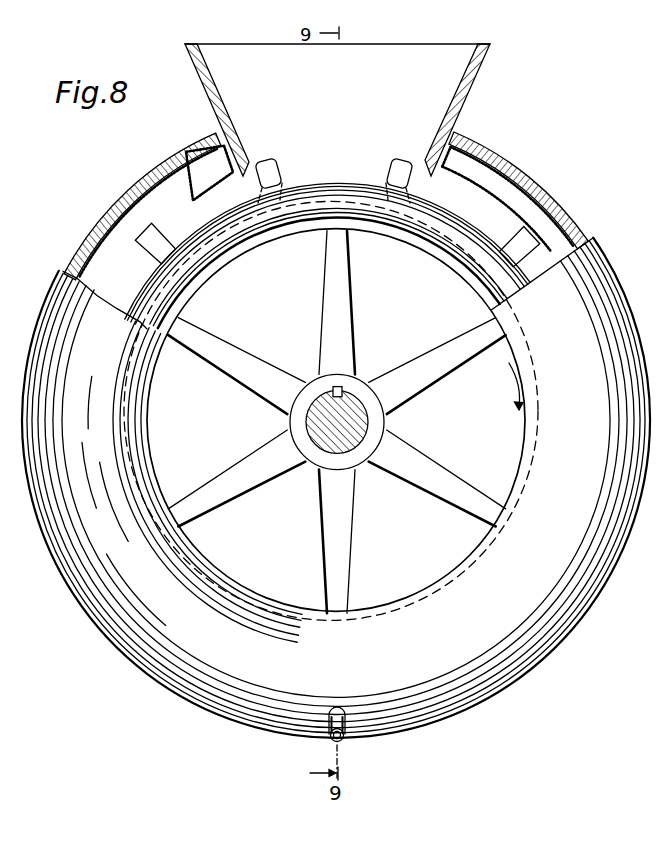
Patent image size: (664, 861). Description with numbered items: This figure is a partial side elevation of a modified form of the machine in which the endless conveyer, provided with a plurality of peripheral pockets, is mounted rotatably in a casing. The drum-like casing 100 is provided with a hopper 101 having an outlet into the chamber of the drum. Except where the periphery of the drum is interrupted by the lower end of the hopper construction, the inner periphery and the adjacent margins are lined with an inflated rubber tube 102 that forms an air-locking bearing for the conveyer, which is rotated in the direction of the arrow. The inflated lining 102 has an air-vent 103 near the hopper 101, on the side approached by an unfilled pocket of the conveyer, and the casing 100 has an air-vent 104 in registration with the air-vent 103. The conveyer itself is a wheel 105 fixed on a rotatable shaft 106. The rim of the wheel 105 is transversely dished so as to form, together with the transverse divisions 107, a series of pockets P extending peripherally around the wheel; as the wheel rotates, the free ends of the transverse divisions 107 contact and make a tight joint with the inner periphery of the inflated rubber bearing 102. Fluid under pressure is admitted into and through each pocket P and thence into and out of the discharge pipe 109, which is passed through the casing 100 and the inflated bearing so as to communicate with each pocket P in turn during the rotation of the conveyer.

The drum-like casing 100 is at (336, 469).
The hopper 101 is at (337, 110).
The inflated rubber tube 102 is at (507, 197).
The air-vent 103 is at (181, 157).
The air-vent 104 is at (176, 152).
The wheel 105 is at (347, 311).
The rotatable shaft 106 is at (356, 430).
The transverse divisions 107 is at (281, 167).
The discharge pipe 109 is at (347, 739).
The pockets P is at (357, 177).